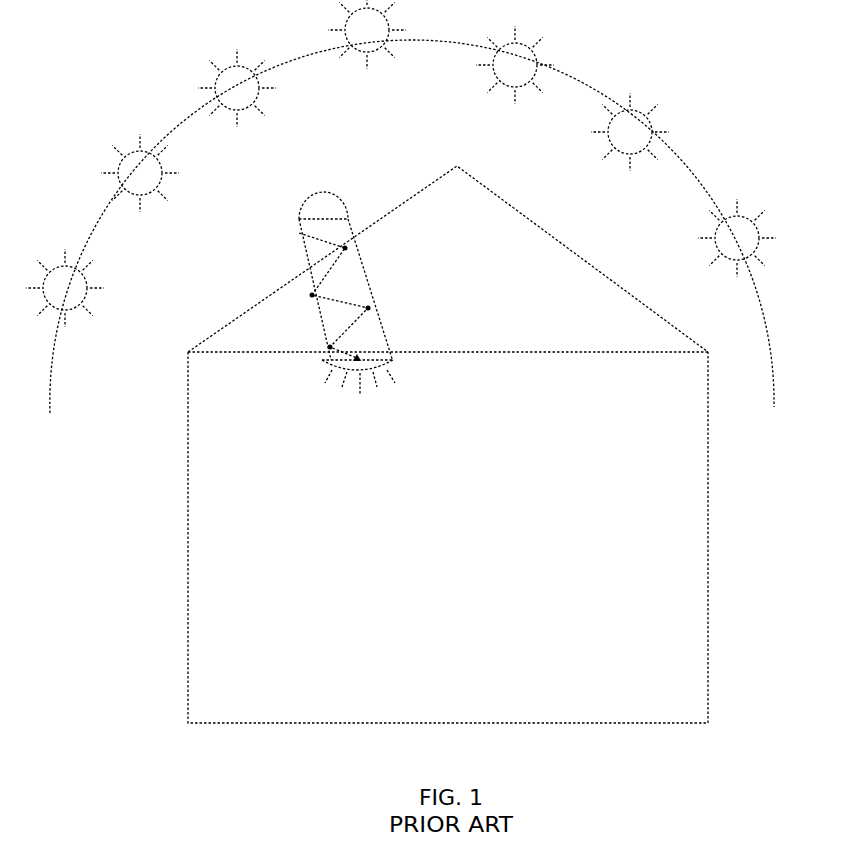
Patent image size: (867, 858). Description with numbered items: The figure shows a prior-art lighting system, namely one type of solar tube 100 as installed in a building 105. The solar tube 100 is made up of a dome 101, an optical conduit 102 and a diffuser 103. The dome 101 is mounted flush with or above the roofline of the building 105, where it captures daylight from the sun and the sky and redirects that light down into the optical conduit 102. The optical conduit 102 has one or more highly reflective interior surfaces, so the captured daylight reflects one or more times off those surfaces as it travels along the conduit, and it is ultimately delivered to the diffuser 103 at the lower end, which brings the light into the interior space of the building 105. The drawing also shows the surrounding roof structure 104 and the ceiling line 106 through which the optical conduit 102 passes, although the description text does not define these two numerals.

The solar tube 100 is at (319, 277).
The dome 101 is at (323, 192).
The optical conduit 102 is at (366, 272).
The diffuser 103 is at (397, 360).
The roof 104 is at (538, 227).
The building 105 is at (710, 533).
The ceiling 106 is at (593, 353).